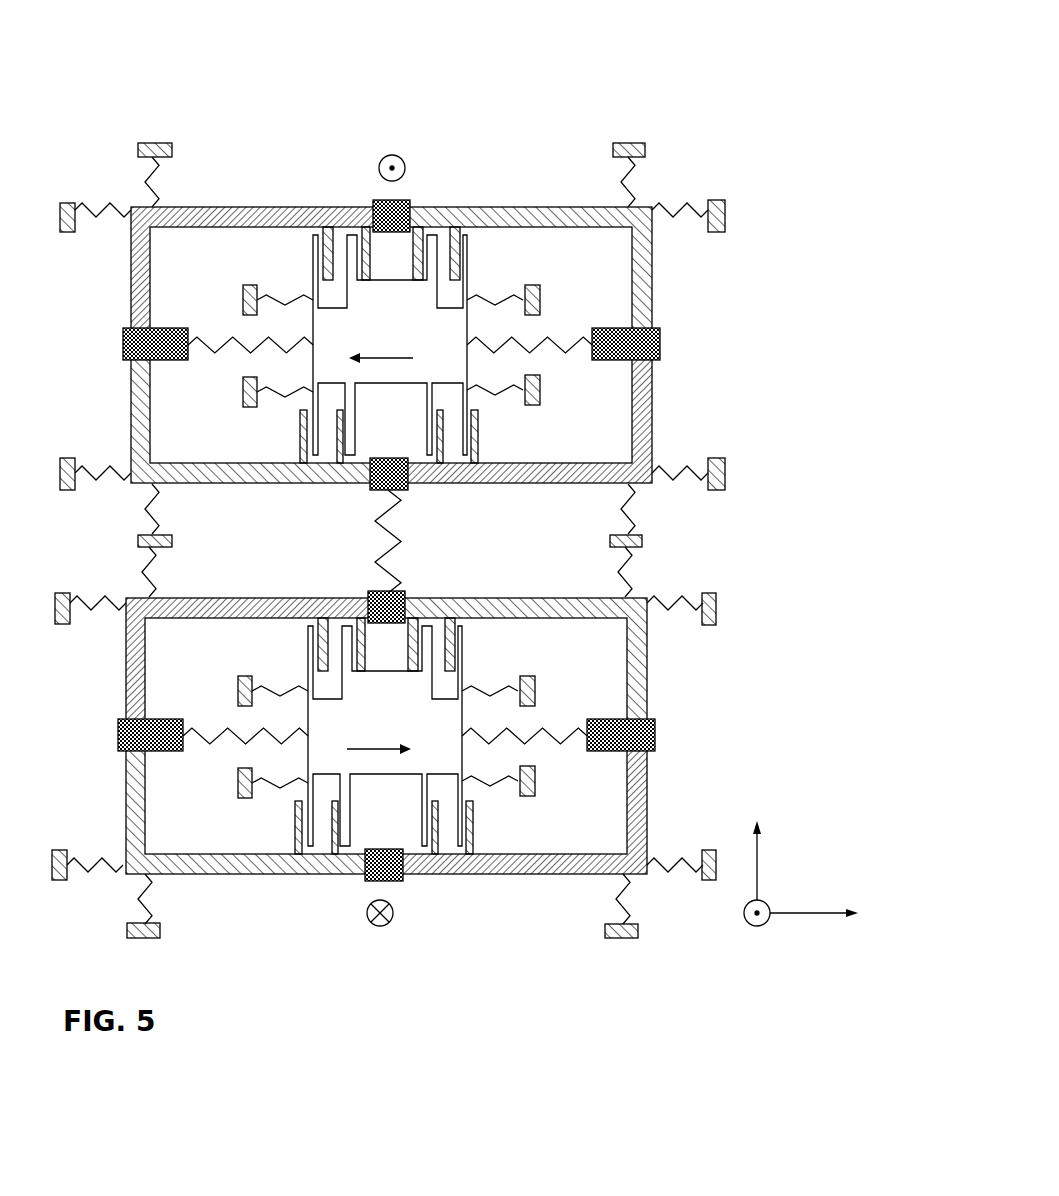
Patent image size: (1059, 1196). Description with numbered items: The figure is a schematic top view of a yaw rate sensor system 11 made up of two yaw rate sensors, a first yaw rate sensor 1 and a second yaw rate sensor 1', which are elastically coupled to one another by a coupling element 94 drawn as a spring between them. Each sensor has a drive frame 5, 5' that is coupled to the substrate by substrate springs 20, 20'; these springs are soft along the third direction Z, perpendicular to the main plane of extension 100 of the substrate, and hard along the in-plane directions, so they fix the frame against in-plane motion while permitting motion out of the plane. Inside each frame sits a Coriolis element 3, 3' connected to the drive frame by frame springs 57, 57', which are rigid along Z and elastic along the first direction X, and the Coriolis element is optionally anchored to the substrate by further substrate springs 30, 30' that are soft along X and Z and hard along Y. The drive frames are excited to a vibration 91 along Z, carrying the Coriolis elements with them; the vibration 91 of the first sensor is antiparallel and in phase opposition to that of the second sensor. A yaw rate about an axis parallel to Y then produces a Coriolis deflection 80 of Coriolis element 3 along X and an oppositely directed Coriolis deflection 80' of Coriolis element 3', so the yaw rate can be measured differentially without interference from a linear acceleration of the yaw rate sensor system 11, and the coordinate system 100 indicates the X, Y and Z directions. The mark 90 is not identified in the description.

The yaw rate sensor system 11 is at (712, 93).
The first yaw rate sensor 1 is at (440, 370).
The second yaw rate sensor 1' is at (436, 761).
The drive frame 5 is at (439, 345).
The drive frame of second yaw rate sensor 5' is at (437, 736).
The Coriolis element 3 is at (340, 345).
The Coriolis element of second yaw rate sensor 3' is at (334, 736).
The further substrate springs 30 is at (391, 314).
The further substrate springs of second yaw rate sensor 30' is at (386, 707).
The frame springs 57 is at (417, 356).
The frame springs of second yaw rate sensor 57' is at (414, 748).
The substrate springs 20 is at (392, 370).
The substrate springs of second yaw rate sensor 20' is at (384, 777).
The Coriolis deflection 80 is at (381, 402).
The Coriolis deflection of second yaw rate sensor 80' is at (379, 793).
The coupling element 94 is at (400, 522).
The first rotation axis (out of plane) 90 is at (392, 154).
The vibration 91 is at (382, 928).
The main plane of extension 100 is at (831, 876).